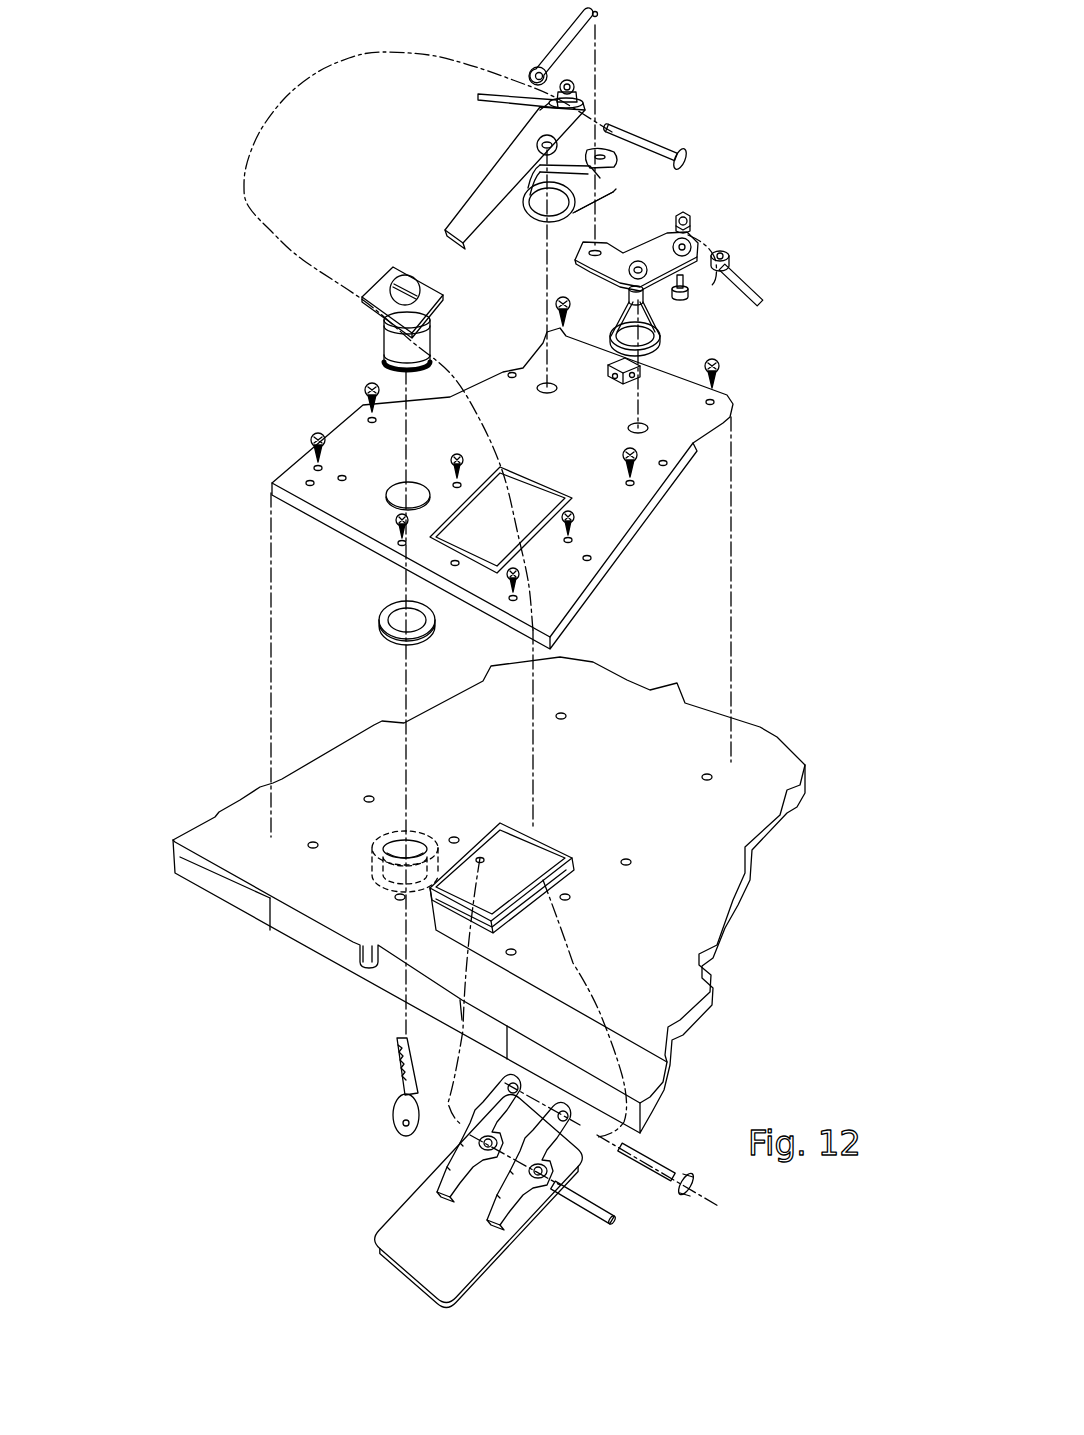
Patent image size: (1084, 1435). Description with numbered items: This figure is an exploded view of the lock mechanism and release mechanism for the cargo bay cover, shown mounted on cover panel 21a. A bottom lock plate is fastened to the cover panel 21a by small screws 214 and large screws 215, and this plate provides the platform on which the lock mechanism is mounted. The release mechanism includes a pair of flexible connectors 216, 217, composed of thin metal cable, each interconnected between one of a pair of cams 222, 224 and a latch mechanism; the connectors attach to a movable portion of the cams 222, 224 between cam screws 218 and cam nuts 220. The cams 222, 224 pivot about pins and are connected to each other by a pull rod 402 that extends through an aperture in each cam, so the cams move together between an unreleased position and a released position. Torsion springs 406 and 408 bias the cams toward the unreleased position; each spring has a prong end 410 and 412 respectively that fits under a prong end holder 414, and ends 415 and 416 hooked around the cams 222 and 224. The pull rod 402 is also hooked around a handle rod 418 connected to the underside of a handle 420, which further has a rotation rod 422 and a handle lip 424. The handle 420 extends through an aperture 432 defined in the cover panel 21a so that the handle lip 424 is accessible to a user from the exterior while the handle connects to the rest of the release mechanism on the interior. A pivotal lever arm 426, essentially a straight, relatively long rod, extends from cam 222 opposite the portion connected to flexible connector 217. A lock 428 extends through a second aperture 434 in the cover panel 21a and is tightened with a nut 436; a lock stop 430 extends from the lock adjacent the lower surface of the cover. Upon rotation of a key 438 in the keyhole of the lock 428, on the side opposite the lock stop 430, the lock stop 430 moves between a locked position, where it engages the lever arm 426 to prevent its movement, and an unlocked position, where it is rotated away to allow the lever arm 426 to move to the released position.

The cover panel 21a is at (226, 891).
The small screws 214 is at (452, 456).
The large screws 215 is at (365, 388).
The flexible connector 216 is at (745, 283).
The flexible connector 217 is at (495, 93).
The cam screws 218 is at (688, 297).
The cam nuts 220 is at (690, 215).
The cam 222 is at (550, 126).
The cam 224 is at (647, 257).
The pull rod 402 is at (555, 44).
The torsion spring 406 is at (533, 218).
The torsion spring 408 is at (660, 345).
The prong end 410 is at (613, 199).
The prong end 412 is at (628, 295).
The prong end holder 414 is at (617, 378).
The spring end 415 is at (600, 181).
The spring end 416 is at (655, 302).
The handle rod 418 is at (695, 1190).
The handle 420 is at (480, 1194).
The rotation rod 422 is at (614, 1222).
The handle lip 424 is at (428, 1257).
The lever arm 426 is at (477, 200).
The lock 428 is at (345, 294).
The lock stop 430 is at (345, 325).
The aperture 432 is at (472, 897).
The aperture 434 is at (403, 847).
The nut 436 is at (390, 638).
The key 438 is at (394, 1108).